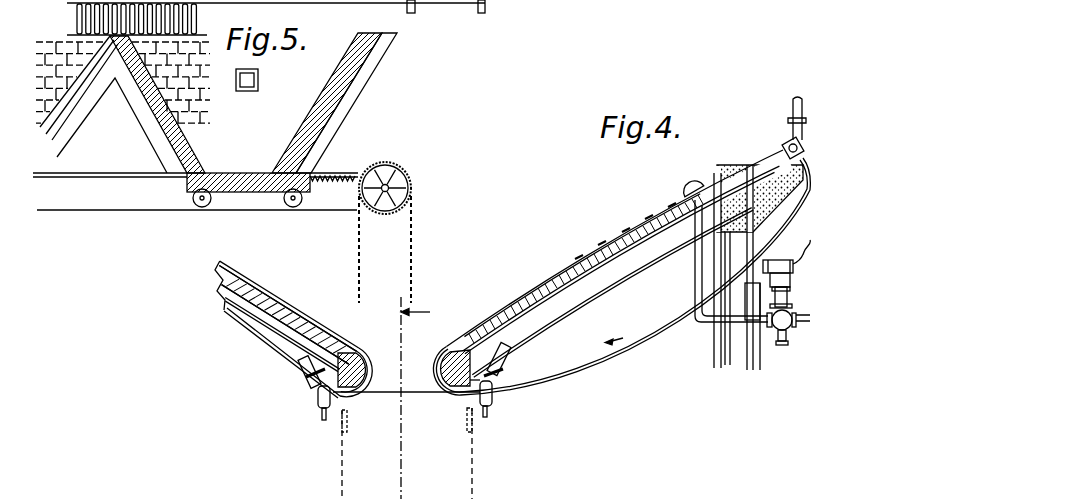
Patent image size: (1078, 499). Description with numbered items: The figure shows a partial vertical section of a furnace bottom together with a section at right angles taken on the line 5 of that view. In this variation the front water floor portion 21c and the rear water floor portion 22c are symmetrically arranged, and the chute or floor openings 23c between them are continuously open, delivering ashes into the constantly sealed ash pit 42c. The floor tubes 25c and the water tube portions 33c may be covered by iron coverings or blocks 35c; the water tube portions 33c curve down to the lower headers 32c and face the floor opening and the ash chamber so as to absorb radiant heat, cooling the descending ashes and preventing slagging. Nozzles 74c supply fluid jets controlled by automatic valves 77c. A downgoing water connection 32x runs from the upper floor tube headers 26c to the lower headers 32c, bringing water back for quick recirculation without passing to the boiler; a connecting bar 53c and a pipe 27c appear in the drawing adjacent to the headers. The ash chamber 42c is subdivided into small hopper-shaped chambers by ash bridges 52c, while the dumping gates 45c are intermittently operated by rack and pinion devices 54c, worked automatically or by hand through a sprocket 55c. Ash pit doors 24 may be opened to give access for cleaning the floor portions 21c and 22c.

In FIG. 5, the ash bridge 52c is at (148, 100).
In FIG. 5, the dumping gate 45c is at (262, 161).
In FIG. 5, the ash pit 42c is at (317, 103).
In FIG. 4, the ash pit 42c is at (444, 453).
In FIG. 5, the ash pit door 24 is at (258, 79).
In FIG. 4, the ash pit door 24 is at (342, 425).
In FIG. 5, the rack and pinion device 54c is at (382, 163).
In FIG. 5, the sprocket 55c is at (361, 249).
In FIG. 4, the front water floor portion 21c is at (270, 307).
In FIG. 4, the iron covering or block 35c is at (287, 301).
In FIG. 4, the chute or floor opening 23c is at (379, 372).
In FIG. 4, the floor tube 25c is at (327, 328).
In FIG. 4, the rear water floor portion 22c is at (603, 273).
In FIG. 4, the water tube portion 33c is at (449, 385).
In FIG. 4, the downgoing water connection 32x is at (630, 348).
In FIG. 4, the connecting bar 53c is at (393, 392).
In FIG. 4, the section line 5 is at (415, 398).
In FIG. 4, the lower header 32c is at (318, 395).
In FIG. 4, the nozzle 74c is at (685, 190).
In FIG. 4, the upper floor tube header 26c is at (785, 140).
In FIG. 4, the pipe 27c is at (793, 102).
In FIG. 4, the automatic valve 77c is at (783, 289).